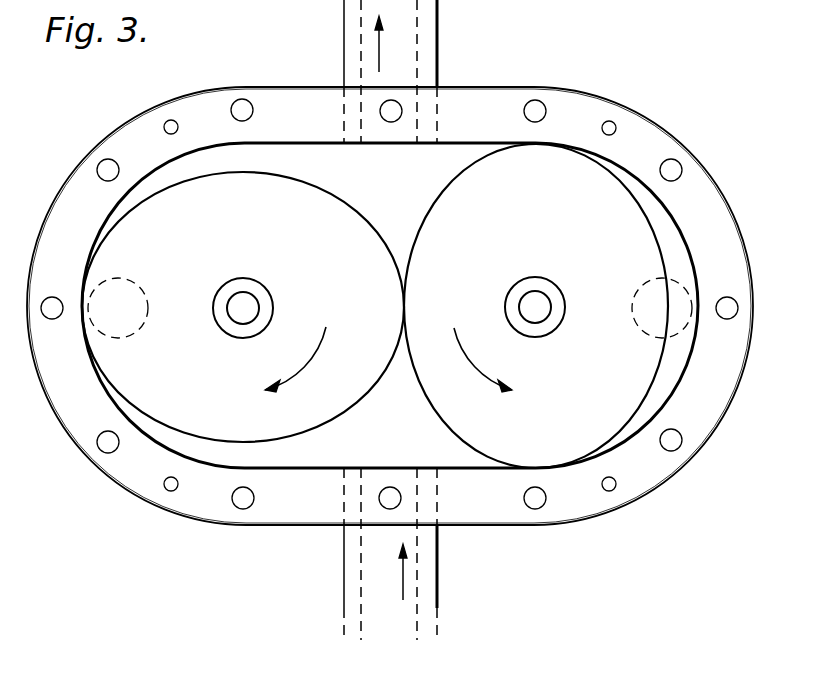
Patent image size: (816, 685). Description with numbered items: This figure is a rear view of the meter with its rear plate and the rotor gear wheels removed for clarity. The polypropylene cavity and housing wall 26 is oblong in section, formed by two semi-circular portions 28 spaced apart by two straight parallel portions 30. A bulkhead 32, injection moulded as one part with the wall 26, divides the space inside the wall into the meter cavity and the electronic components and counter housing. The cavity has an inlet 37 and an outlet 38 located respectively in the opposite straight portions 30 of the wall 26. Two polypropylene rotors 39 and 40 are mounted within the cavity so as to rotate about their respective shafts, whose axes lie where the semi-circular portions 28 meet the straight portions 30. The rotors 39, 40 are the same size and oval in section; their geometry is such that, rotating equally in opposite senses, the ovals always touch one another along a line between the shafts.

The cavity and housing wall 26 is at (243, 84).
The semi-circular portions 28 is at (62, 222).
The straight parallel portions 30 is at (494, 90).
The bulkhead 32 is at (371, 458).
The inlet 37 is at (352, 563).
The outlet 38 is at (353, 33).
The rotor 39 is at (322, 200).
The rotor 40 is at (472, 193).